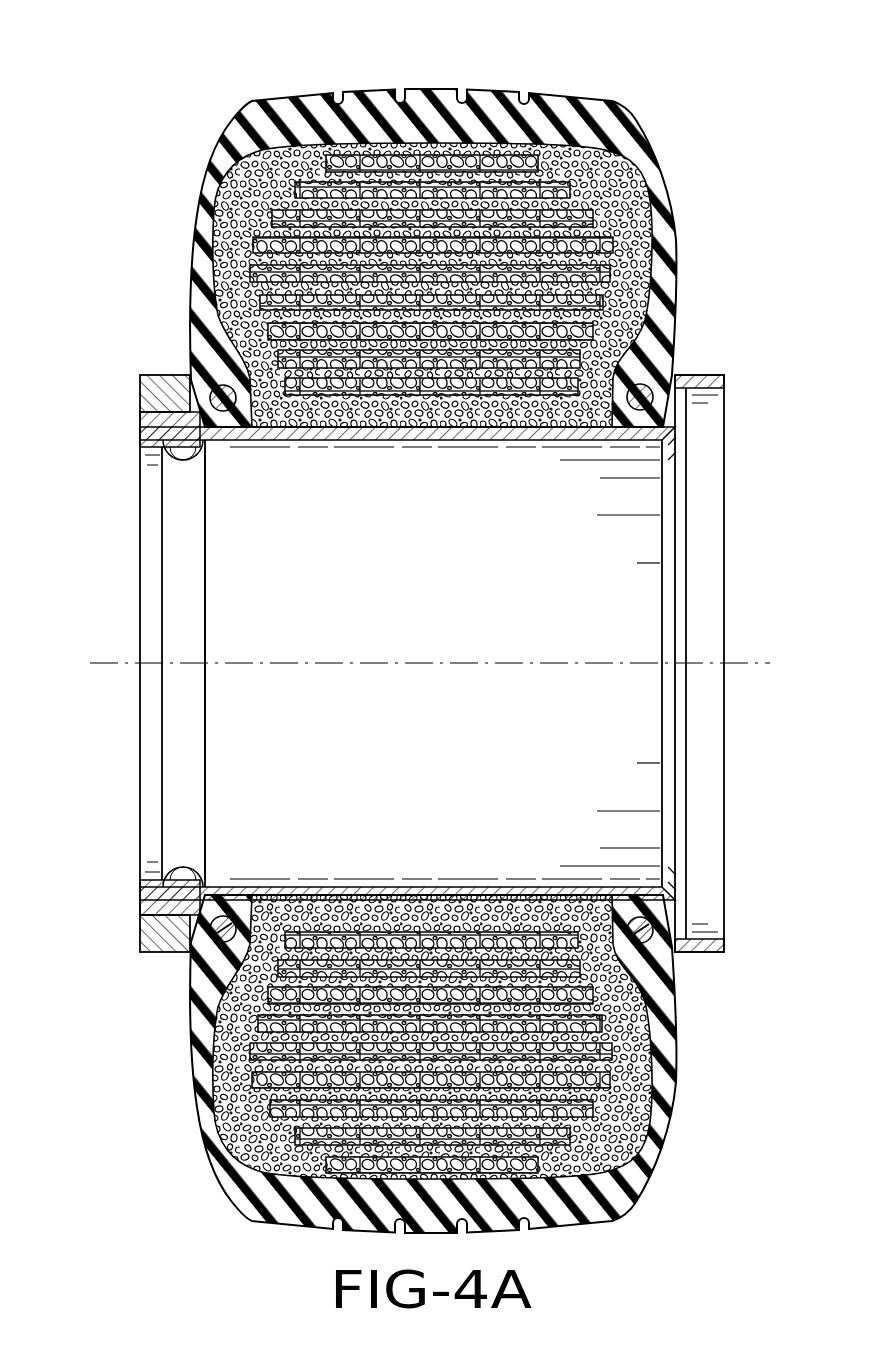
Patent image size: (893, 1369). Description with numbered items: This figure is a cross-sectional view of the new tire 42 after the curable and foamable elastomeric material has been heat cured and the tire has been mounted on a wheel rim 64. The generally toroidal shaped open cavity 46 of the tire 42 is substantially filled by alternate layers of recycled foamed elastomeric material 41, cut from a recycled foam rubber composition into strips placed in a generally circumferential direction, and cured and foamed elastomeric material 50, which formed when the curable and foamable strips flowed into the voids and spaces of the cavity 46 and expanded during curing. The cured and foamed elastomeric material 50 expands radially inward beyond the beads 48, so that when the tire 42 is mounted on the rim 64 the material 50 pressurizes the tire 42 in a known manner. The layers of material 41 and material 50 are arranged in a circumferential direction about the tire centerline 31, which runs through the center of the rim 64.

The centerline 31 is at (397, 662).
The recycled foamed elastomeric material 41 is at (256, 245).
The new tire 42 is at (259, 97).
The open cavity 46 is at (624, 170).
The beads 48 is at (213, 391).
The cured and foamed elastomeric material 50 is at (243, 220).
The wheel rim 64 is at (150, 395).